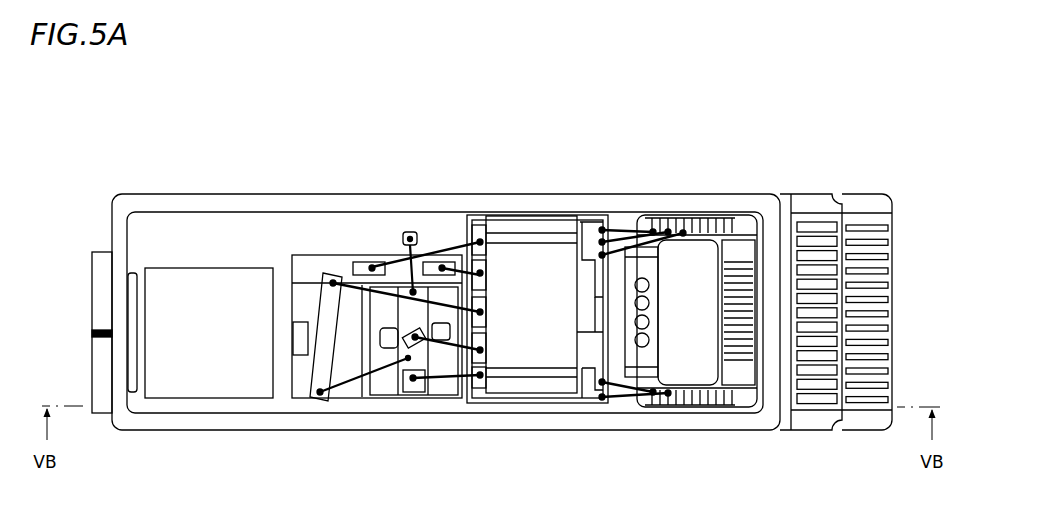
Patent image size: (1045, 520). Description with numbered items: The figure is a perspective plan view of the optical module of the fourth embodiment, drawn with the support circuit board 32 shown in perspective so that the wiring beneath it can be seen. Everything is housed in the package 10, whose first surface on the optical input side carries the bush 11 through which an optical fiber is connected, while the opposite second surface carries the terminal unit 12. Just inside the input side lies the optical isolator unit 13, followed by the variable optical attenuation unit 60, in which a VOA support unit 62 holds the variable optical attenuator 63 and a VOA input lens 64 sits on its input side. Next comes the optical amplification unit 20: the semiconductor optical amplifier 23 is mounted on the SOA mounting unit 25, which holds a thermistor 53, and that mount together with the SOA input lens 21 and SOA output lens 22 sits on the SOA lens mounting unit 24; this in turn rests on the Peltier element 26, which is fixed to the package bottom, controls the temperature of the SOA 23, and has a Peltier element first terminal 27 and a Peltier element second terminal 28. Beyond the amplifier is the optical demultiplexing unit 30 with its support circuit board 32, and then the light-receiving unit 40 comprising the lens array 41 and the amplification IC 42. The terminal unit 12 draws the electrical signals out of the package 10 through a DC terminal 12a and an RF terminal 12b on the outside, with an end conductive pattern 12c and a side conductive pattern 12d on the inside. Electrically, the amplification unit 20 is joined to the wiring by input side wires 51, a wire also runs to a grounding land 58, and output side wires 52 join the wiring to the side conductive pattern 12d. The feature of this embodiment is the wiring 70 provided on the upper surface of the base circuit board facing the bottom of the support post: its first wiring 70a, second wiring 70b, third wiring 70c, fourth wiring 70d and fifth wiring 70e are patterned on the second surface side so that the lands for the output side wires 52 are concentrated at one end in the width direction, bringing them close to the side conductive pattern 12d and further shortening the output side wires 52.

The package 10 is at (147, 425).
The bush 11 is at (96, 289).
The terminal unit 12 is at (827, 202).
The DC terminal 12a is at (812, 418).
The RF terminal 12b is at (862, 418).
The end conductive pattern 12c is at (738, 376).
The side conductive pattern 12d is at (683, 404).
The optical isolator unit 13 is at (208, 376).
The optical amplification unit 20 is at (423, 241).
The SOA input lens 21 is at (390, 388).
The SOA output lens 22 is at (422, 346).
The semiconductor optical amplifier 23 is at (440, 342).
The SOA lens mounting unit 24 is at (398, 362).
The SOA mounting unit 25 is at (379, 262).
The Peltier element 26 is at (325, 270).
The Peltier element first terminal 27 is at (356, 283).
The Peltier element second terminal 28 is at (432, 262).
The optical demultiplexing unit 30 is at (505, 208).
The support circuit board 32 is at (522, 358).
The light-receiving unit 40 is at (697, 249).
The lens array 41 is at (643, 276).
The amplification IC 42 is at (709, 262).
The input side wire 51 is at (463, 225).
The output side wire 52 is at (621, 252).
The thermistor 53 is at (413, 393).
The grounding land 58 is at (405, 232).
The variable optical attenuation unit 60 is at (304, 247).
The VOA support unit 62 is at (323, 403).
The variable optical attenuator 63 is at (342, 367).
The VOA input lens 64 is at (297, 358).
The wiring 70 is at (502, 411).
The first wiring 70a is at (583, 394).
The second wiring 70b is at (591, 353).
The third wiring 70c is at (604, 316).
The fourth wiring 70d is at (596, 240).
The fifth wiring 70e is at (583, 224).